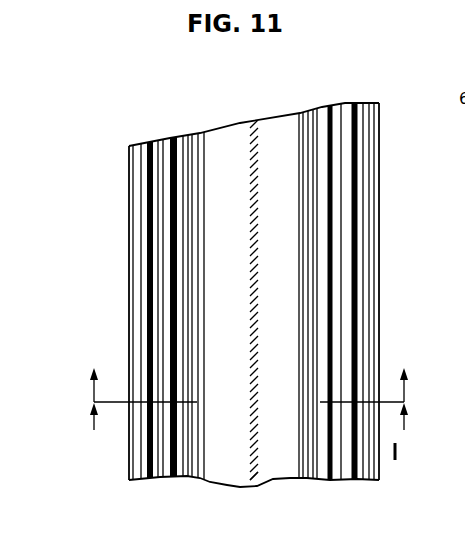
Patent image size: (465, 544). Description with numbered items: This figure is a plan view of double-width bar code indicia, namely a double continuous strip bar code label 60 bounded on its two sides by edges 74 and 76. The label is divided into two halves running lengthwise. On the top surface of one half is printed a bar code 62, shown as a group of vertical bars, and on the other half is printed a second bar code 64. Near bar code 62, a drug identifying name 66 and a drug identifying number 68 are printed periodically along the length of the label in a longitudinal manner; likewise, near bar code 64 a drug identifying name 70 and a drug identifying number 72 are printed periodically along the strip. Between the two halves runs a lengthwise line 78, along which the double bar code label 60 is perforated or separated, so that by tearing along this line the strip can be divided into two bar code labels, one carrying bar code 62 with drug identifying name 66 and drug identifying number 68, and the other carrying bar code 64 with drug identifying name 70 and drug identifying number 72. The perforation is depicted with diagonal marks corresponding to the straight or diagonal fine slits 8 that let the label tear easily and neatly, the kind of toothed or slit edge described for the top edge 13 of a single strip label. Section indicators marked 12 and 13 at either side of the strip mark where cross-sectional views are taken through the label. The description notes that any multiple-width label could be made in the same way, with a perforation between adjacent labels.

The double continuous strip bar code label 60 is at (114, 206).
The bar code 62 is at (168, 295).
The bar code 64 is at (336, 295).
The drug identifying name 66 is at (244, 308).
The drug identifying number 68 is at (213, 305).
The drug identifying name 70 is at (265, 304).
The drug identifying number 72 is at (290, 308).
The edge 74 is at (128, 291).
The edge 76 is at (379, 250).
The line 78 is at (254, 288).
The slits 8 is at (254, 476).
The section line FIG. 12 is at (250, 371).
The top edge 13 is at (250, 434).